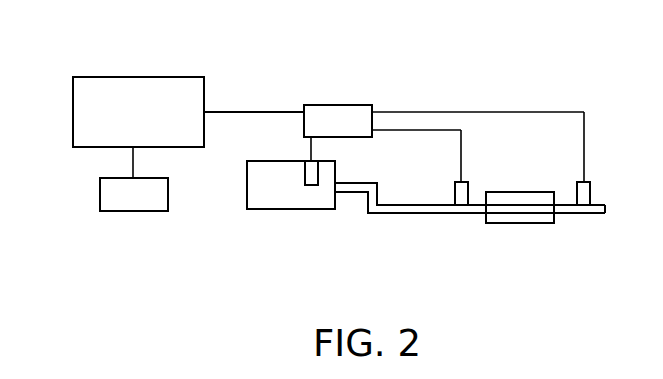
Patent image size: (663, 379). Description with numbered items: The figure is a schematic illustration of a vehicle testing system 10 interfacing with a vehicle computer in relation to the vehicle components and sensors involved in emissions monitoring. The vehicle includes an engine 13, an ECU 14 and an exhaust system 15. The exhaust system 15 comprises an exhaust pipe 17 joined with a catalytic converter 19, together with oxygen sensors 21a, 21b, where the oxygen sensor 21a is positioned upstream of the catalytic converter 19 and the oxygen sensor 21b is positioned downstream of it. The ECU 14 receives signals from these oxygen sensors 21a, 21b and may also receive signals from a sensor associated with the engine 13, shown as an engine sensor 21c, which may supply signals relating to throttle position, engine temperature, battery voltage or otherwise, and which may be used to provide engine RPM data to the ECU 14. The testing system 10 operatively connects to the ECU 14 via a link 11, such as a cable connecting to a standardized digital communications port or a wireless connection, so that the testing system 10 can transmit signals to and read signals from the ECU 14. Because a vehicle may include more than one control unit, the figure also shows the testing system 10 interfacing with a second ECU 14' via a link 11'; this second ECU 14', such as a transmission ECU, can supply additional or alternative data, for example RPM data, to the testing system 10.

The vehicle testing system 10 is at (158, 72).
The link 11 is at (254, 93).
The link 11' is at (93, 166).
The ECU 14 is at (444, 124).
The second ECU 14' is at (110, 211).
The engine 13 is at (275, 209).
The engine sensor 21c is at (305, 175).
The exhaust pipe 17 is at (413, 212).
The exhaust system 15 is at (372, 223).
The oxygen sensor 21a is at (455, 193).
The catalytic converter 19 is at (518, 223).
The oxygen sensor 21b is at (591, 187).